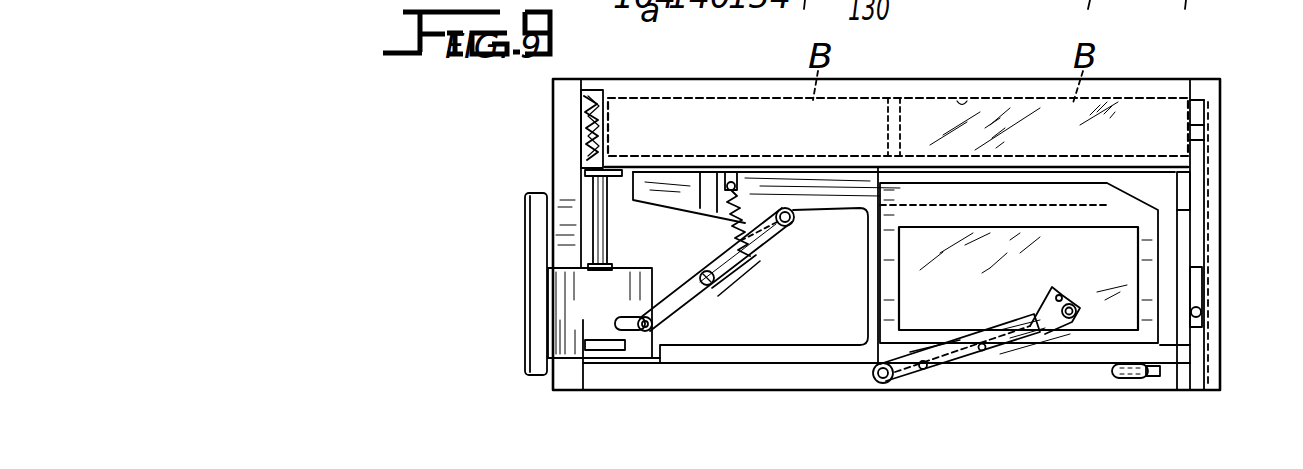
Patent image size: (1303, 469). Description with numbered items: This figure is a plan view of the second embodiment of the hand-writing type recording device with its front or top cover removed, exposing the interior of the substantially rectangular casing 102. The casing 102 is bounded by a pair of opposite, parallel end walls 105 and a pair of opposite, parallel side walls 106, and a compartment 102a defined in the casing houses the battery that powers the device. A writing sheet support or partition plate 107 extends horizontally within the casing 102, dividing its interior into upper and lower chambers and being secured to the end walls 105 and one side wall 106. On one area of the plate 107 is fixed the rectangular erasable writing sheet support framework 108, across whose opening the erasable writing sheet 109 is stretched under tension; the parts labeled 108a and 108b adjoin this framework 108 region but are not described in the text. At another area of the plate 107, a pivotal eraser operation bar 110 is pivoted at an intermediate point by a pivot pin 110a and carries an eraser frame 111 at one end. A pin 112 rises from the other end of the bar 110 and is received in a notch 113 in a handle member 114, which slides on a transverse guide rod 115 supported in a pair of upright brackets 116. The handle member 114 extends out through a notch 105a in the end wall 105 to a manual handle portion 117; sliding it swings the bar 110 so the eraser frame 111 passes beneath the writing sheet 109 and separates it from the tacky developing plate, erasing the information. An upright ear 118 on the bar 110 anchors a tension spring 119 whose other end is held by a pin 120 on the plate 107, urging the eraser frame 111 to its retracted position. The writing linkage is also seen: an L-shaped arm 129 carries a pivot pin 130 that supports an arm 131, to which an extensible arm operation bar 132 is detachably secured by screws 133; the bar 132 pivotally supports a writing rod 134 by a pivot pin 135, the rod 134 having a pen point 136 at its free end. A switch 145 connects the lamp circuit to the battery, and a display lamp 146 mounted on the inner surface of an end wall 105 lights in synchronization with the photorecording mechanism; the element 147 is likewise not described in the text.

The casing 102 is at (565, 382).
The compartment 102a is at (960, 97).
The end wall 105 is at (562, 208).
The notch 105a is at (560, 233).
The side wall 106 is at (1138, 78).
The writing sheet support or partition plate 107 is at (800, 350).
The erasable writing sheet support framework 108 is at (870, 282).
The cassette body portion 108a is at (1143, 337).
The cassette latch 108b is at (1160, 290).
The erasable writing sheet 109 is at (882, 386).
The pivotal eraser operation bar 110 is at (718, 258).
The pivot pin 110a is at (790, 207).
The eraser frame 111 is at (774, 185).
The pin 112 is at (688, 345).
The notch 113 is at (615, 355).
The handle member 114 is at (567, 287).
The transverse guide rod 115 is at (602, 325).
The upright bracket 116 is at (583, 166).
The manual handle portion 117 is at (533, 307).
The upright ear 118 is at (714, 286).
The tension spring 119 is at (752, 250).
The pin 120 is at (731, 182).
The L-shaped arm 129 is at (1012, 346).
The pivot pin 130 is at (920, 370).
The arm 131 is at (965, 355).
The extensible arm operation bar 132 is at (1042, 333).
The screw 133 is at (982, 343).
The writing rod 134 is at (1132, 380).
The pivot pin 135 is at (1057, 295).
The pen point 136 is at (1097, 281).
The switch 145 is at (1205, 142).
The display lamp 146 is at (1142, 378).
The guide block 147 is at (1187, 182).